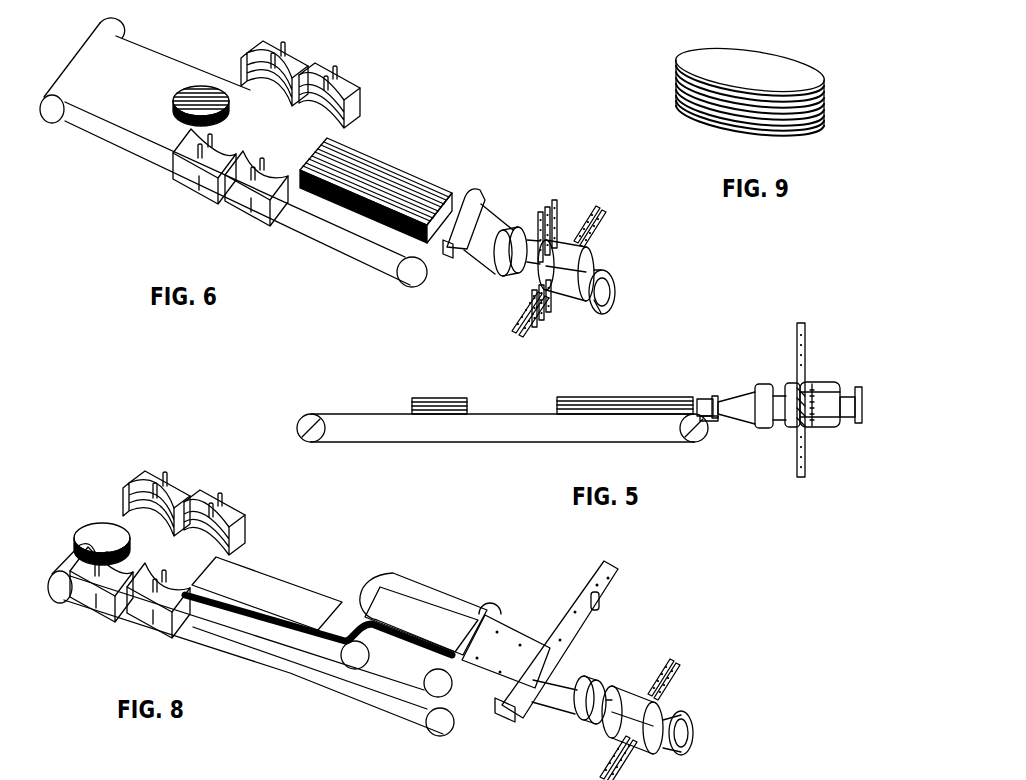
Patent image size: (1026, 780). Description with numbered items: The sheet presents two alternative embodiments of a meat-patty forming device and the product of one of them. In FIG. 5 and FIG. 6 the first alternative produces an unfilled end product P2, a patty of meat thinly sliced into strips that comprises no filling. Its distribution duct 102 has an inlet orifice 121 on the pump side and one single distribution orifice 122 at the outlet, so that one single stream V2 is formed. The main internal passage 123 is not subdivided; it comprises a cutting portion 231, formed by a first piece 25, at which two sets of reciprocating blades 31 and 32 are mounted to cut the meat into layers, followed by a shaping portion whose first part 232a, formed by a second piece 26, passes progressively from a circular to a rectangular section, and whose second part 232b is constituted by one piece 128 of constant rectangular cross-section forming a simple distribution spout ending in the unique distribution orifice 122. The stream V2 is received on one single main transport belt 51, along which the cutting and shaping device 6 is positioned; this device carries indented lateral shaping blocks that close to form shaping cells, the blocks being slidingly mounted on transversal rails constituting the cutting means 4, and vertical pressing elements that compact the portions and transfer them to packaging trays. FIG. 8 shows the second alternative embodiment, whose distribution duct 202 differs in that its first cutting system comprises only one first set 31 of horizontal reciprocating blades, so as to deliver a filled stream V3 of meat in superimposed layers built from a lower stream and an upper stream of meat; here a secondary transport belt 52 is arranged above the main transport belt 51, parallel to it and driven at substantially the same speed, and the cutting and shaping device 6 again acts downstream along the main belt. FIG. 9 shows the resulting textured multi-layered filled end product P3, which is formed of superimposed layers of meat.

In FIG. 6, the main transport belt 51 is at (313, 237).
In FIG. 5, the main transport belt 51 is at (482, 443).
In FIG. 8, the main transport belt 51 is at (293, 669).
In FIG. 6, the end product P2 is at (203, 92).
In FIG. 5, the end product P2 is at (440, 397).
In FIG. 9, the multi-layered filled end product P3 is at (723, 60).
In FIG. 8, the multi-layered filled end product P3 is at (91, 525).
In FIG. 6, the cutting and shaping device 6 is at (352, 81).
In FIG. 8, the cutting and shaping device 6 is at (185, 481).
In FIG. 6, the single stream V2 is at (398, 171).
In FIG. 5, the single stream V2 is at (628, 396).
In FIG. 8, the filled stream V3 is at (293, 580).
In FIG. 6, the piece of constant rectangular cross-section 128 is at (472, 198).
In FIG. 5, the piece of constant rectangular cross-section 128 is at (716, 395).
In FIG. 6, the distribution duct 102 is at (504, 221).
In FIG. 6, the second piece 26 is at (475, 250).
In FIG. 6, the first piece 25 is at (563, 302).
In FIG. 6, the second set of reciprocating blades 32 is at (552, 210).
In FIG. 5, the second set of reciprocating blades 32 is at (797, 331).
In FIG. 6, the first set of flat reciprocating blades 31 is at (600, 216).
In FIG. 5, the first set of flat reciprocating blades 31 is at (814, 384).
In FIG. 8, the first set of flat reciprocating blades 31 is at (670, 661).
In FIG. 5, the distribution orifice 122 is at (702, 398).
In FIG. 5, the first part of the shaping portion 232a is at (735, 406).
In FIG. 5, the second part of the shaping portion 232b is at (713, 422).
In FIG. 5, the main internal passage 123 is at (778, 429).
In FIG. 5, the cutting portion 231 is at (828, 428).
In FIG. 5, the inlet orifice 121 is at (858, 387).
In FIG. 8, the secondary transport belt 52 is at (456, 599).
In FIG. 8, the mounting plate 4 is at (561, 631).
In FIG. 8, the distribution duct 202 is at (556, 709).